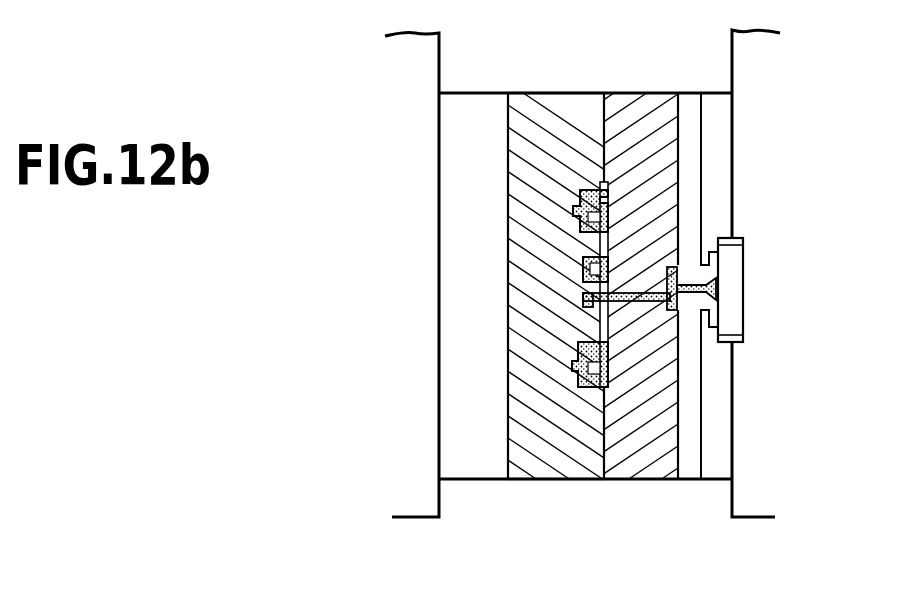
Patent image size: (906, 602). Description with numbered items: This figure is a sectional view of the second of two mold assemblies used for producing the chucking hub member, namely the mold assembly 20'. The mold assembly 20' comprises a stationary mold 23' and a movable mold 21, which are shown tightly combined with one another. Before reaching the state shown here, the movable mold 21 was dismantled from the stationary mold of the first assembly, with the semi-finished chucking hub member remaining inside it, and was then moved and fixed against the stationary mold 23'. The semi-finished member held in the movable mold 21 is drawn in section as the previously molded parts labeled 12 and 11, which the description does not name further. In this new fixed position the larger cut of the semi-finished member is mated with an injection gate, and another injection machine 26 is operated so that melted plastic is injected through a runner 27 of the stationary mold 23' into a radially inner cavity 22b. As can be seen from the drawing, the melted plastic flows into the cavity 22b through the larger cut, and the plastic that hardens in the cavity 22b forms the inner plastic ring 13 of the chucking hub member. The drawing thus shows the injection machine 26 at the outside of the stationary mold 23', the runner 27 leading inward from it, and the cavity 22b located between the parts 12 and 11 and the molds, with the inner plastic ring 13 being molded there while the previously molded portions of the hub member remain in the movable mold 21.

The mold assembly 20' is at (582, 293).
The movable mold 21 is at (548, 103).
The stationary mold 23' is at (651, 255).
The upper piezoelectric element 12 is at (580, 228).
The inner plastic ring 13 is at (583, 270).
The radially inner cavity 22b is at (588, 302).
The lower piezoelectric element 11 is at (585, 332).
The injection machine 26 is at (745, 252).
The runner 27 is at (647, 300).